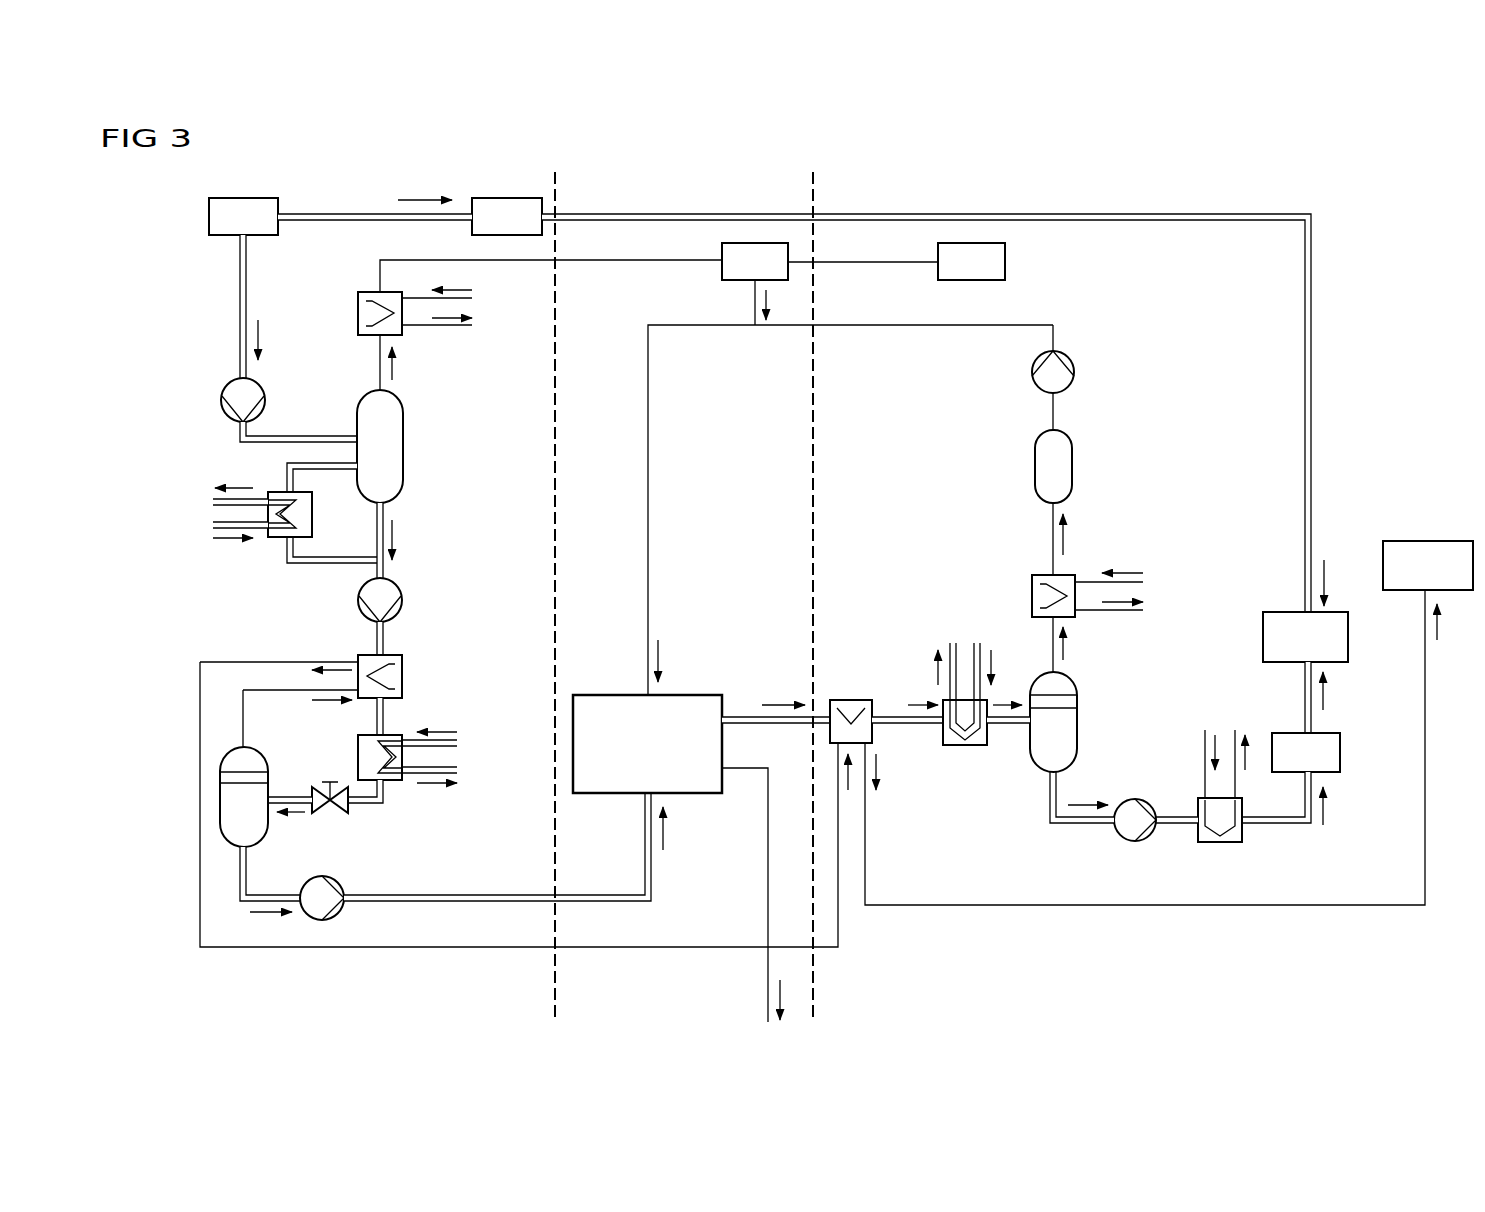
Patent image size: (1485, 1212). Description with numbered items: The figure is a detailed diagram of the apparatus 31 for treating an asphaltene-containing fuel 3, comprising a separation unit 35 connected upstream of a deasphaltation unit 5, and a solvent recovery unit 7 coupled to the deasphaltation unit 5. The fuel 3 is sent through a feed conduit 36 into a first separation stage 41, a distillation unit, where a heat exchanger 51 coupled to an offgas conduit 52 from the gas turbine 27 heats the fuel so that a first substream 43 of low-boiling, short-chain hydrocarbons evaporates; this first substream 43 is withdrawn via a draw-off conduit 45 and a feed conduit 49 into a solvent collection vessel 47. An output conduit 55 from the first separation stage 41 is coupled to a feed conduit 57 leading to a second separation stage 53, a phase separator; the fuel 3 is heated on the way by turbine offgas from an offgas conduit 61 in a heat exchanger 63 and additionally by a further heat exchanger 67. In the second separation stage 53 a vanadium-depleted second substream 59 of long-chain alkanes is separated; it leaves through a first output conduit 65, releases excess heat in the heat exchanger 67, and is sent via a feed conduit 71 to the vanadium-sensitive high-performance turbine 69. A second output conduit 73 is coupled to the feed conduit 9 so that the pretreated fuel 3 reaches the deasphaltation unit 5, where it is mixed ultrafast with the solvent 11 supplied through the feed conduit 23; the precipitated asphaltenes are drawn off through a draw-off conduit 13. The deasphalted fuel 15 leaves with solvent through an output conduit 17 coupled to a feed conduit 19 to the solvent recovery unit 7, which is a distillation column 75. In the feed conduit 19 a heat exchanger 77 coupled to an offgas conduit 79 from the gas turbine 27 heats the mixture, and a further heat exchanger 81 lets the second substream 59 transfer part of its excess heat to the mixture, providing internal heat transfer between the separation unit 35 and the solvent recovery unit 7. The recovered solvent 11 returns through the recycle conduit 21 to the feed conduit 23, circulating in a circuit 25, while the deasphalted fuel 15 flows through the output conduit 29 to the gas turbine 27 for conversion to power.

The asphaltene-containing fuel 3 is at (193, 306).
The deasphaltation unit 5 is at (647, 693).
The solvent recovery unit 7 is at (1113, 922).
The feed conduit to the deasphaltation unit 9 is at (655, 883).
The solvent 11 is at (612, 695).
The draw-off conduit 13 is at (768, 990).
The deasphalted fuel 15 is at (1280, 826).
The output conduit from the deasphaltation unit 17 is at (748, 717).
The feed conduit to the solvent recovery unit 19 is at (895, 715).
The recycle conduit 21 is at (1056, 336).
The feed conduit to the deasphaltation unit 23 is at (650, 447).
The circuit 25 is at (935, 920).
The gas turbine 27 is at (1280, 612).
The output conduit from the solvent recovery unit 29 is at (1083, 826).
The apparatus 31 is at (1074, 181).
The separation unit 35 is at (234, 339).
The feed conduit 36 is at (193, 306).
The first separation stage 41 is at (403, 456).
The first substream 43 is at (378, 276).
The draw-off conduit 45 is at (367, 319).
The solvent collection vessel 47 is at (755, 243).
The feed conduit to the solvent collection vessel 49 is at (604, 262).
The heat exchanger 51 is at (278, 537).
The offgas conduit 52 is at (213, 526).
The second separation stage 53 is at (220, 800).
The output conduit from the first separation stage 55 is at (388, 520).
The feed conduit to the second separation stage 57 is at (358, 806).
The second substream 59 is at (469, 842).
The offgas conduit 61 is at (459, 757).
The heat exchanger 63 is at (435, 776).
The first output conduit from the second separation stage 65 is at (229, 704).
The heat exchanger 67 is at (403, 675).
The high-performance turbine 69 is at (1430, 541).
The feed conduit to the high-performance turbine 71 is at (1330, 907).
The second output conduit from the second separation stage 73 is at (240, 875).
The distillation column 75 is at (1078, 725).
The heat exchanger 77 is at (965, 746).
The offgas conduit 79 is at (968, 658).
The heat exchanger 81 is at (853, 700).